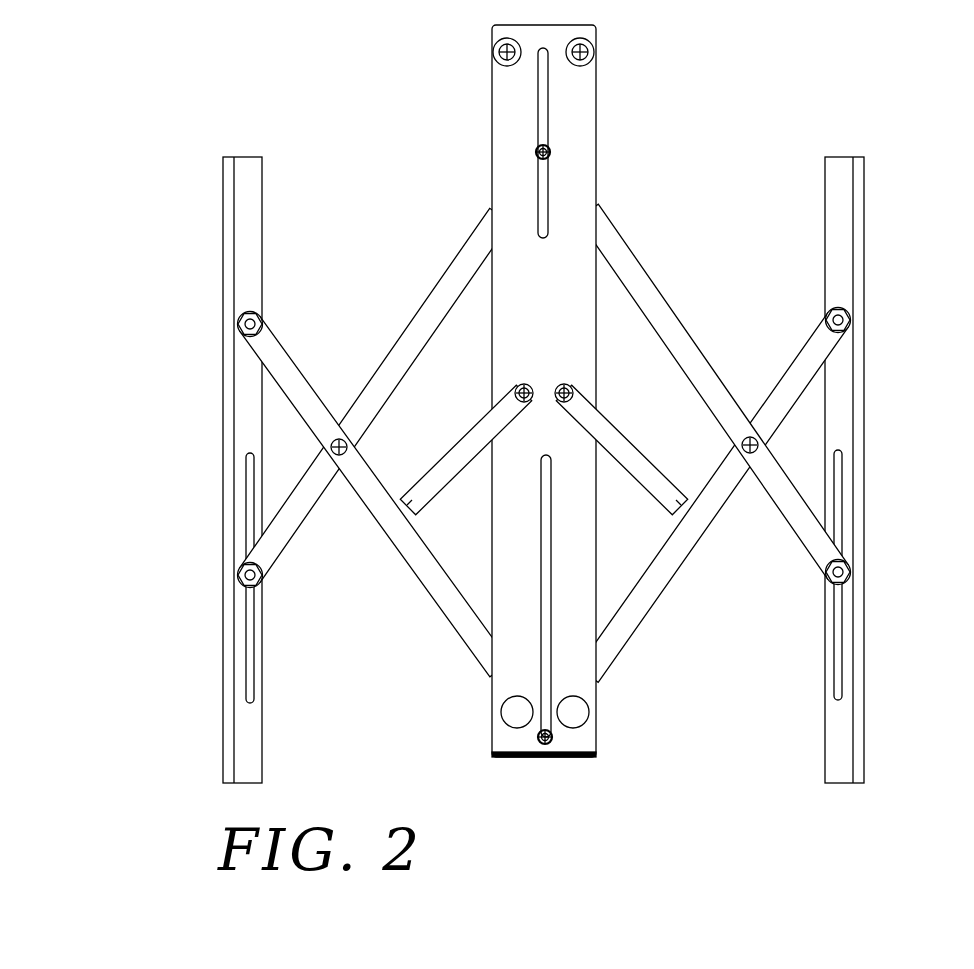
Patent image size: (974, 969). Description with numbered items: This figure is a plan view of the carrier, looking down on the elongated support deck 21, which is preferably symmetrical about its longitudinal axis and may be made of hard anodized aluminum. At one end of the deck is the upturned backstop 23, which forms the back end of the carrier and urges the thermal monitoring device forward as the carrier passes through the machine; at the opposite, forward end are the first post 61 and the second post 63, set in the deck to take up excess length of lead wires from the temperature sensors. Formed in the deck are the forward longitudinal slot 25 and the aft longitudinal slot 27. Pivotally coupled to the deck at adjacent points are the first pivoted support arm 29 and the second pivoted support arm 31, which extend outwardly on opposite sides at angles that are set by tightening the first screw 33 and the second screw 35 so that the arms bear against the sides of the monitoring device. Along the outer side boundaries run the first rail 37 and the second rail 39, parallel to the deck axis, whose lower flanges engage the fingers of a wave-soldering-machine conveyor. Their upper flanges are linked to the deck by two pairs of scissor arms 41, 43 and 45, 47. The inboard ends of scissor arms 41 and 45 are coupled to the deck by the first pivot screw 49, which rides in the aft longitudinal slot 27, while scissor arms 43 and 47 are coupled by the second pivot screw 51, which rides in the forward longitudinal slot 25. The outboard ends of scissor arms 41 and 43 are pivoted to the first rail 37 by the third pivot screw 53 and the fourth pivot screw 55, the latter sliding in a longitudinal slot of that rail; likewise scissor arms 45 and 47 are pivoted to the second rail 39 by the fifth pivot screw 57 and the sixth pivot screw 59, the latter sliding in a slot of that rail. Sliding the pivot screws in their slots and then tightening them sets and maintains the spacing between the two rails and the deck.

The elongated support deck 21 is at (490, 181).
The upturned backstop 23 is at (580, 758).
The forward longitudinal slot 25 is at (544, 178).
The aft longitudinal slot 27 is at (545, 662).
The first pivoted support arm 29 is at (434, 472).
The second pivoted support arm 31 is at (656, 472).
The first screw 33 is at (514, 392).
The second screw 35 is at (574, 392).
The first rail 37 is at (226, 400).
The second rail 39 is at (865, 378).
The scissor arm 41 is at (420, 582).
The scissor arm 43 is at (412, 322).
The scissor arm 45 is at (670, 584).
The scissor arm 47 is at (688, 340).
The first pivot screw 49 is at (553, 737).
The second pivot screw 51 is at (552, 152).
The third pivot screw 53 is at (262, 320).
The fourth pivot screw 55 is at (262, 584).
The fifth pivot screw 57 is at (826, 320).
The sixth pivot screw 59 is at (826, 576).
The first post 61 is at (494, 54).
The second post 63 is at (594, 52).